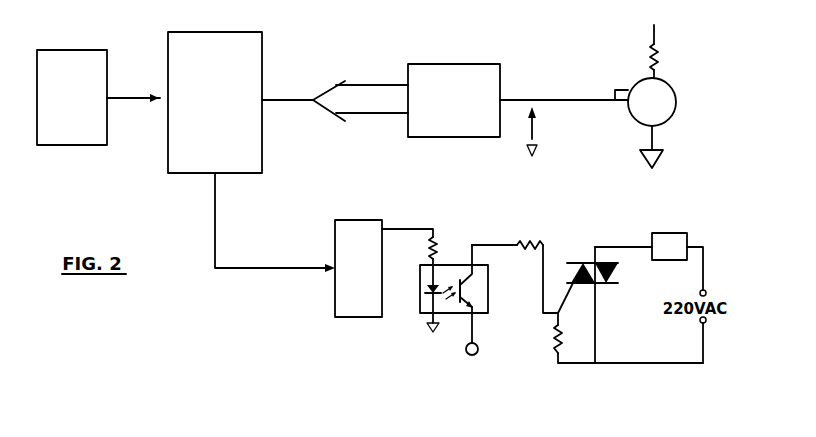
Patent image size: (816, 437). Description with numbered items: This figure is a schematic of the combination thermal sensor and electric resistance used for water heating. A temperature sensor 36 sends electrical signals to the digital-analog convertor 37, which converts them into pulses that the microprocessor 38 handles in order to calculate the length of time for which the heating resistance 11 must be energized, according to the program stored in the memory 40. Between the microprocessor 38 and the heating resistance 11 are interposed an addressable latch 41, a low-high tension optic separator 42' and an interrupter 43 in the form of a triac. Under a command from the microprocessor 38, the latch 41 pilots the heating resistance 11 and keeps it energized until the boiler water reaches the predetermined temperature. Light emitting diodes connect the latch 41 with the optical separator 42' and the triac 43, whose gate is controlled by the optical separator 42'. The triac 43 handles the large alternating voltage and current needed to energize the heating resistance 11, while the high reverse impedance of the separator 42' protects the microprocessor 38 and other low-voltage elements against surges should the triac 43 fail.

The memory 40 is at (70, 63).
The microprocessor 38 is at (202, 50).
The digital-analog convertor 37 is at (438, 80).
The temperature sensor 36 is at (646, 95).
The addressable latch 41 is at (348, 286).
The optic separator 42' is at (454, 271).
The interrupter (triac) 43 is at (585, 262).
The heating resistance 11 is at (675, 243).